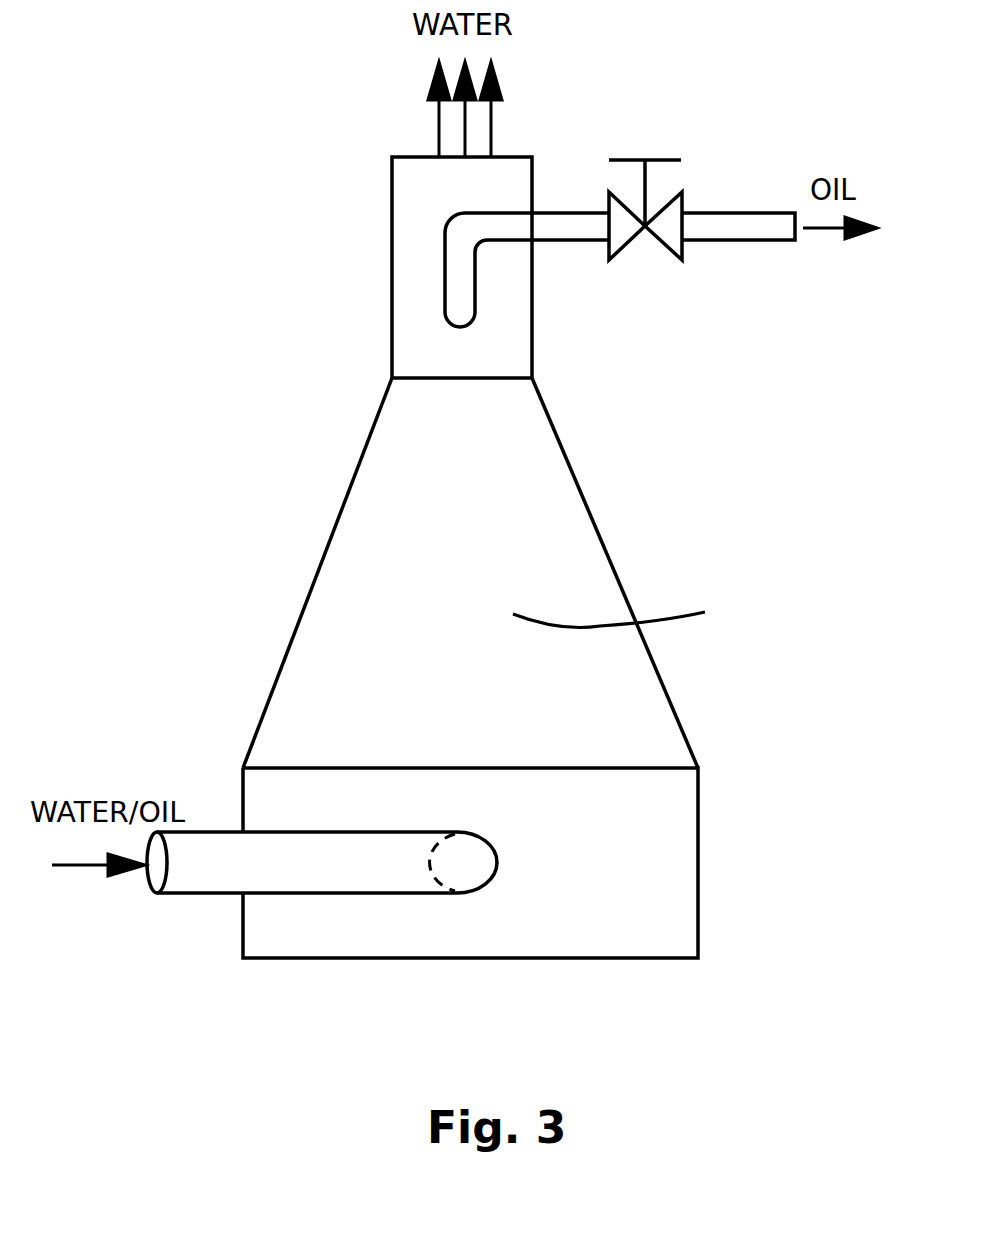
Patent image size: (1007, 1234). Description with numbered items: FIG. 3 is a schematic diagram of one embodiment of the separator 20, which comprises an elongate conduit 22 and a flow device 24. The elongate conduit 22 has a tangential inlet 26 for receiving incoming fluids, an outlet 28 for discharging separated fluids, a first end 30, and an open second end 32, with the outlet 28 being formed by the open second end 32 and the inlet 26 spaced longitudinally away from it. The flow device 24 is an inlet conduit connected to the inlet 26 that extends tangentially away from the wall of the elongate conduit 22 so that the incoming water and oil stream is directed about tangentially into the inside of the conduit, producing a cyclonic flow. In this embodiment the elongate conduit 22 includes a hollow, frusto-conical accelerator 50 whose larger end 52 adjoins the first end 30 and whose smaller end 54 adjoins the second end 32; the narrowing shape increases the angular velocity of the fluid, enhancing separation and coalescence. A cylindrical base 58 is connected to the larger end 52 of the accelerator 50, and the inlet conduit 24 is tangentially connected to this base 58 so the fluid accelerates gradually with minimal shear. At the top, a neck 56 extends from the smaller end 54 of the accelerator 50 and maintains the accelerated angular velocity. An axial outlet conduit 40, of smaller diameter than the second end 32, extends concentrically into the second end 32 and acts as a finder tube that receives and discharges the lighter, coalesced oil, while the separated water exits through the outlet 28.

The separator 20 is at (660, 432).
The elongate conduit 22 is at (630, 535).
The flow device 24 is at (222, 886).
The tangential inlet 26 is at (460, 862).
The outlet 28 is at (510, 157).
The first end 30 is at (617, 918).
The open second end 32 is at (397, 206).
The axial outlet conduit 40 is at (557, 230).
The frusto-conical accelerator 50 is at (631, 612).
The larger end 52 is at (630, 768).
The smaller end 54 is at (490, 378).
The neck 56 is at (500, 325).
The cylindrical base 58 is at (635, 811).